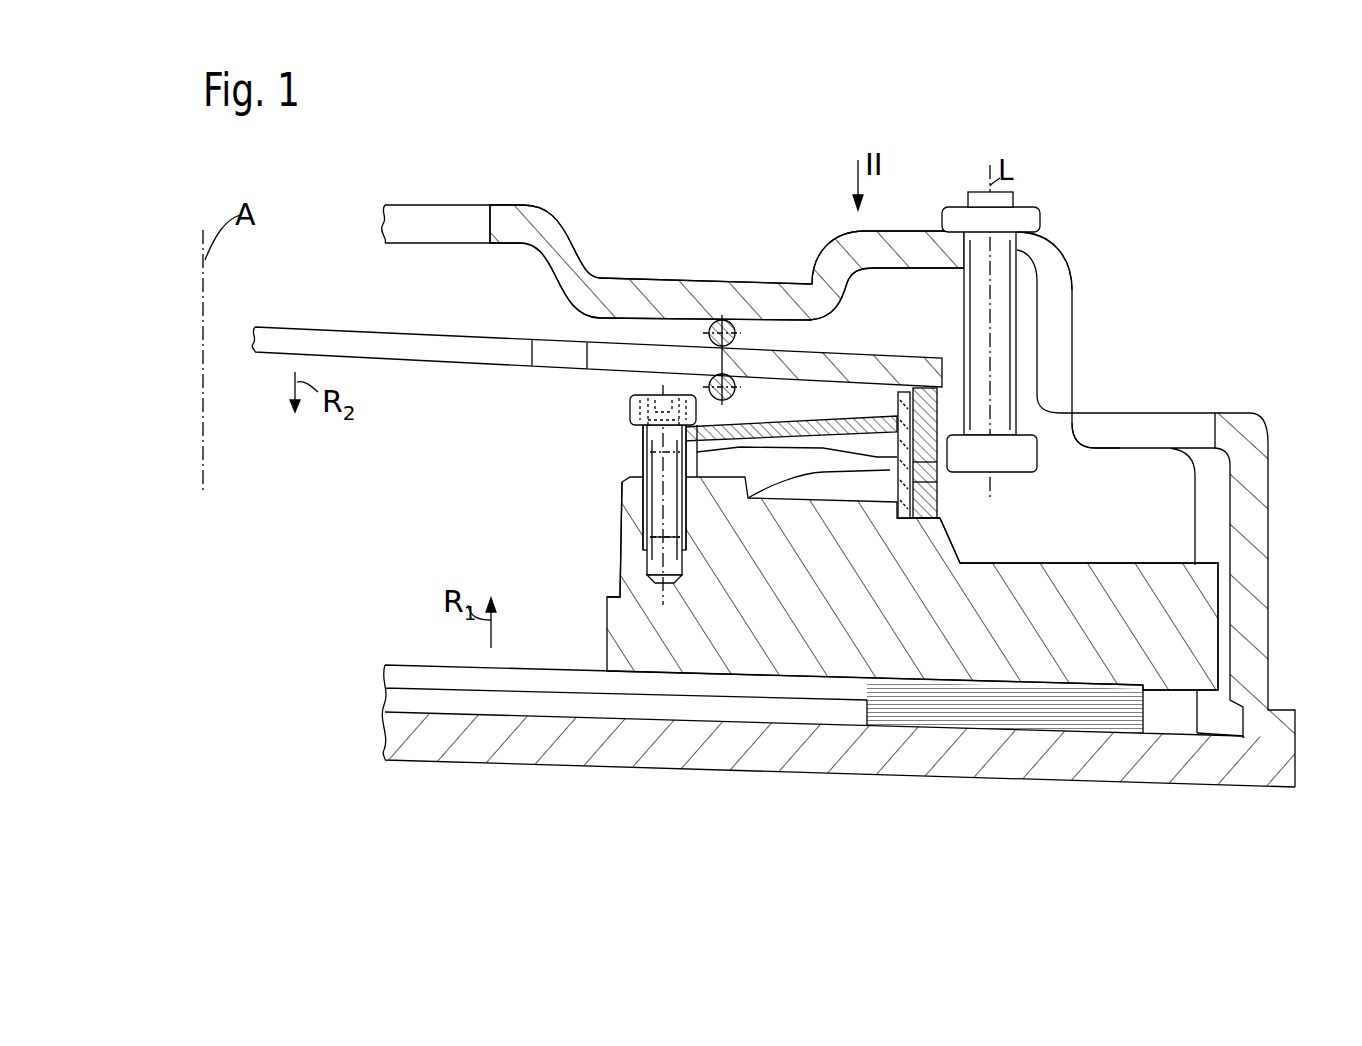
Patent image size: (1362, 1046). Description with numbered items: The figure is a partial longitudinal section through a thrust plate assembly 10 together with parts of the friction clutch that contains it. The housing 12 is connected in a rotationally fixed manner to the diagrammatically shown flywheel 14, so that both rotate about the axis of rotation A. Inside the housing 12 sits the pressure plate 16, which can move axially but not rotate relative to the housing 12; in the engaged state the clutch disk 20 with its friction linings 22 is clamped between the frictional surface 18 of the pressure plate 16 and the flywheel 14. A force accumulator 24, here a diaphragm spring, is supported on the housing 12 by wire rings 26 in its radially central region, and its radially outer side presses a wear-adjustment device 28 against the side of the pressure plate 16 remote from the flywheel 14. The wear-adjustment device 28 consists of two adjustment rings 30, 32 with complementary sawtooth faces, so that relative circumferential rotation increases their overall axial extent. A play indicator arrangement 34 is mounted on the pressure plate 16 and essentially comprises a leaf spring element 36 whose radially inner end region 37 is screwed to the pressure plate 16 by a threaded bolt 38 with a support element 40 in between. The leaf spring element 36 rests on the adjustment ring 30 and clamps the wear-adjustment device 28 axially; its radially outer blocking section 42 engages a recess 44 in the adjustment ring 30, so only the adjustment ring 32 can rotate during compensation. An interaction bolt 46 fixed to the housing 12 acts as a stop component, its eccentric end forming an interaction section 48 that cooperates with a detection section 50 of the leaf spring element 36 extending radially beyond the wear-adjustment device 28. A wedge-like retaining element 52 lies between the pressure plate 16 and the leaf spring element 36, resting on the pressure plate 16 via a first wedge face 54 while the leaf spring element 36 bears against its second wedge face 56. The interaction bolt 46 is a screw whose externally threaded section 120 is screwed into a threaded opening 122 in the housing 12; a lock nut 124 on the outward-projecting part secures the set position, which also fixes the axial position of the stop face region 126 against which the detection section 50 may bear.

The thrust plate assembly 10 is at (1140, 247).
The housing 12 is at (1255, 463).
The flywheel 14 is at (1120, 777).
The pressure plate 16 is at (1200, 602).
The frictional surface 18 is at (1203, 779).
The clutch disk 20 is at (650, 690).
The friction linings 22 is at (1012, 692).
The force accumulator 24 is at (450, 347).
The wire rings 26 is at (715, 377).
The wear-adjustment device 28 is at (1092, 406).
The adjustment ring 30 is at (657, 452).
The adjustment ring 32 is at (610, 598).
The play indicator arrangement 34 is at (863, 397).
The leaf spring element 36 is at (1030, 320).
The radially inner end region 37 is at (633, 433).
The threaded bolt 38 is at (645, 456).
The support element 40 is at (632, 465).
The blocking section 42 is at (930, 425).
The recess 44 is at (925, 452).
The interaction bolt 46 is at (998, 256).
The interaction section 48 is at (962, 453).
The detection section 50 is at (920, 470).
The retaining element 52 is at (660, 535).
The first wedge face 54 is at (898, 522).
The second wedge face 56 is at (935, 395).
The externally threaded section 120 is at (1000, 240).
The threaded opening 122 is at (1020, 265).
The lock nut 124 is at (955, 213).
The stop face region 126 is at (963, 507).